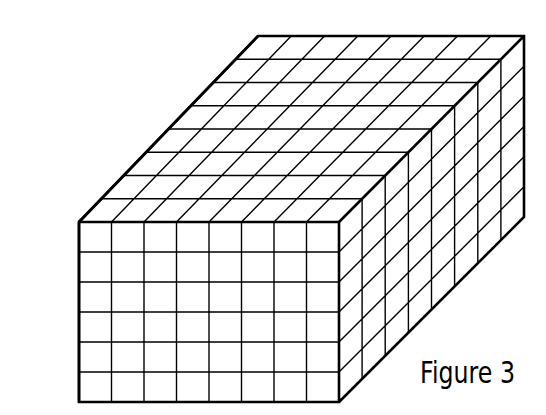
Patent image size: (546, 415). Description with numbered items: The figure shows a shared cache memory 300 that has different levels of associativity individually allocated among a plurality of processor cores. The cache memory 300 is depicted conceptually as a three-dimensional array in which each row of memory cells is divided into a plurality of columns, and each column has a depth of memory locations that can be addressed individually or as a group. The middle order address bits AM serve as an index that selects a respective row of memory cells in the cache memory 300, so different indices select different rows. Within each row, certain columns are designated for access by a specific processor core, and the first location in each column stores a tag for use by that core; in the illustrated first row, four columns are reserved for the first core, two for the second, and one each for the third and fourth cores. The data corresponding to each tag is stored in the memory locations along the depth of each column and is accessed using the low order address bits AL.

The shared cache memory 300 is at (79, 328).
The low order address bits AL is at (168, 120).
The middle order address bits AM is at (72, 238).